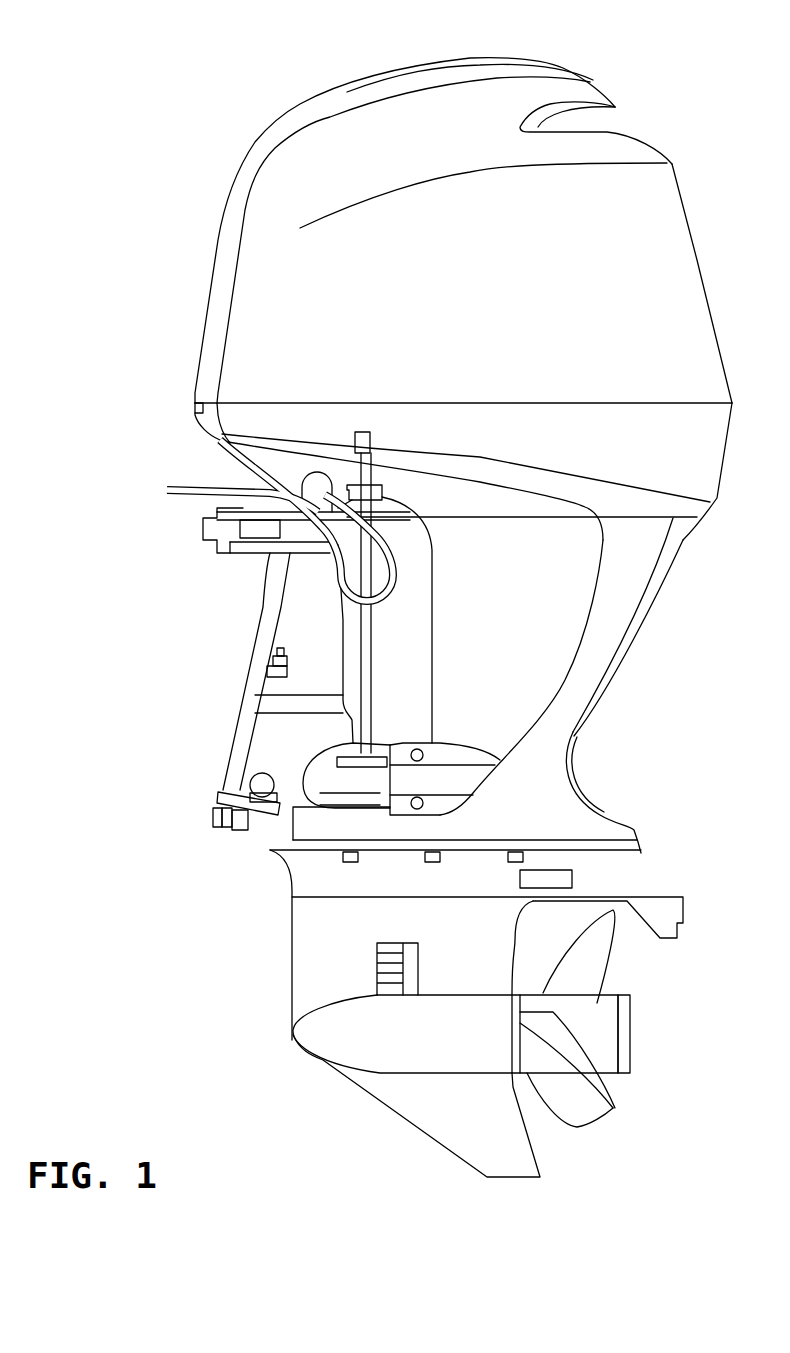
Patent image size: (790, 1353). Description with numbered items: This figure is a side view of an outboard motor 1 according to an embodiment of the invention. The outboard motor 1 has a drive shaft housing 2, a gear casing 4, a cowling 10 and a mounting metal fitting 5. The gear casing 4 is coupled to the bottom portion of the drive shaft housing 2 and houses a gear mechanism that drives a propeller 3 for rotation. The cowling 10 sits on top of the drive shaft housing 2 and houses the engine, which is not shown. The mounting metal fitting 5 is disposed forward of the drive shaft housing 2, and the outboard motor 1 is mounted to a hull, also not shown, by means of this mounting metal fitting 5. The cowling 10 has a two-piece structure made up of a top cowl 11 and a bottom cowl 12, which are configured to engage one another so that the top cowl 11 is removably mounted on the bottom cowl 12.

The outboard motor 1 is at (204, 92).
The drive shaft housing 2 is at (565, 627).
The propeller 3 is at (600, 968).
The gear casing 4 is at (307, 942).
The mounting metal fitting 5 is at (247, 707).
The cowling 10 is at (112, 320).
The top cowl 11 is at (232, 333).
The bottom cowl 12 is at (232, 405).